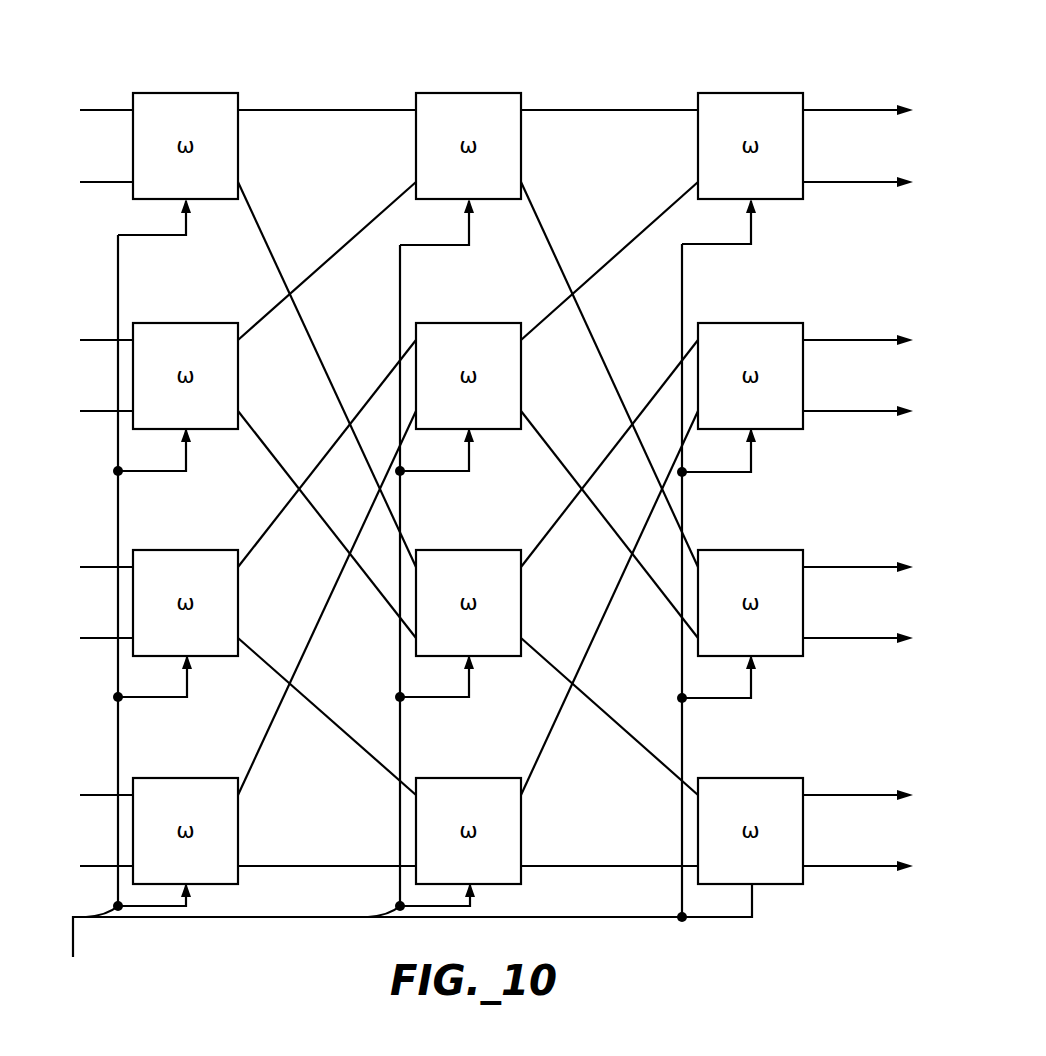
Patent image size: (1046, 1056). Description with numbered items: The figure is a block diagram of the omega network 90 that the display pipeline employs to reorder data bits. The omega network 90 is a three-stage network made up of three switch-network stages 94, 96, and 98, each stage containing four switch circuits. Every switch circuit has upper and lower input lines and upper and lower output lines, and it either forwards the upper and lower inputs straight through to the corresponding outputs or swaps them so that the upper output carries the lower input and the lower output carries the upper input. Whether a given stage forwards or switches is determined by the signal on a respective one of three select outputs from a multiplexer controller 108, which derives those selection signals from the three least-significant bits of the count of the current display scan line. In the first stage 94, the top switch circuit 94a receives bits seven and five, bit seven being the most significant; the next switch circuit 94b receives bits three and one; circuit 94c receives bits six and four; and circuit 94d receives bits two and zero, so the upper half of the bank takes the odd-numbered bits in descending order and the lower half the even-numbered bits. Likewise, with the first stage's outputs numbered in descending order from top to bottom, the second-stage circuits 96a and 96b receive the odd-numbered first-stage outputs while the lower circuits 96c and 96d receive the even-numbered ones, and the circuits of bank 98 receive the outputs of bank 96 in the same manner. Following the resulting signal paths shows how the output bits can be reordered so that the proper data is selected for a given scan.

The omega network 90 is at (479, 524).
The first switch-network stage 94 is at (168, 458).
The top switch circuit of first switch bank 94a is at (163, 93).
The second switch circuit of first switch bank 94b is at (165, 323).
The third switch circuit of first switch bank 94c is at (165, 550).
The bottom switch circuit of first switch bank 94d is at (165, 778).
The second switch-network stage 96 is at (451, 458).
The second-stage switch circuit 96a is at (447, 93).
The second-stage switch circuit 96b is at (447, 323).
The second-stage switch circuit 96c is at (447, 550).
The second-stage switch circuit 96d is at (447, 778).
The third switch-network stage 98 is at (767, 78).
The multiplexer controller 108 is at (401, 607).